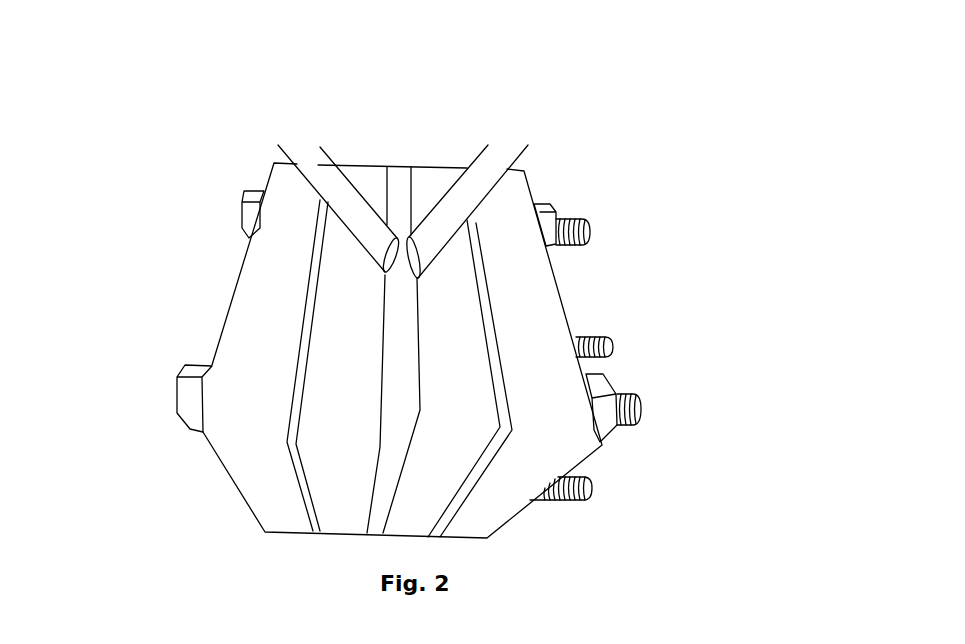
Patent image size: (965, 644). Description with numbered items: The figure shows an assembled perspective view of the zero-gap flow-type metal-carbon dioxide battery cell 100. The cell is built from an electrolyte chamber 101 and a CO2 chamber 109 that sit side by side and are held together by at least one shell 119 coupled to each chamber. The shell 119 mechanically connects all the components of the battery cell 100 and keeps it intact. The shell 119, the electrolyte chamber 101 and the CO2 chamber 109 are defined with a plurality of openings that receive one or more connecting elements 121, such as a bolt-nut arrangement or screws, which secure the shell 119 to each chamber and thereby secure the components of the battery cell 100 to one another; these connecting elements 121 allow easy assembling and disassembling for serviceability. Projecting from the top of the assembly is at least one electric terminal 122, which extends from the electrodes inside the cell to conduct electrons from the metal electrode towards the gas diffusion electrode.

The battery cell 100 is at (503, 284).
The electrolyte chamber 101 is at (340, 318).
The CO2 chamber 109 is at (460, 338).
The shell 119 is at (515, 212).
The connecting elements 121 is at (588, 232).
The electric terminal 122 is at (337, 163).